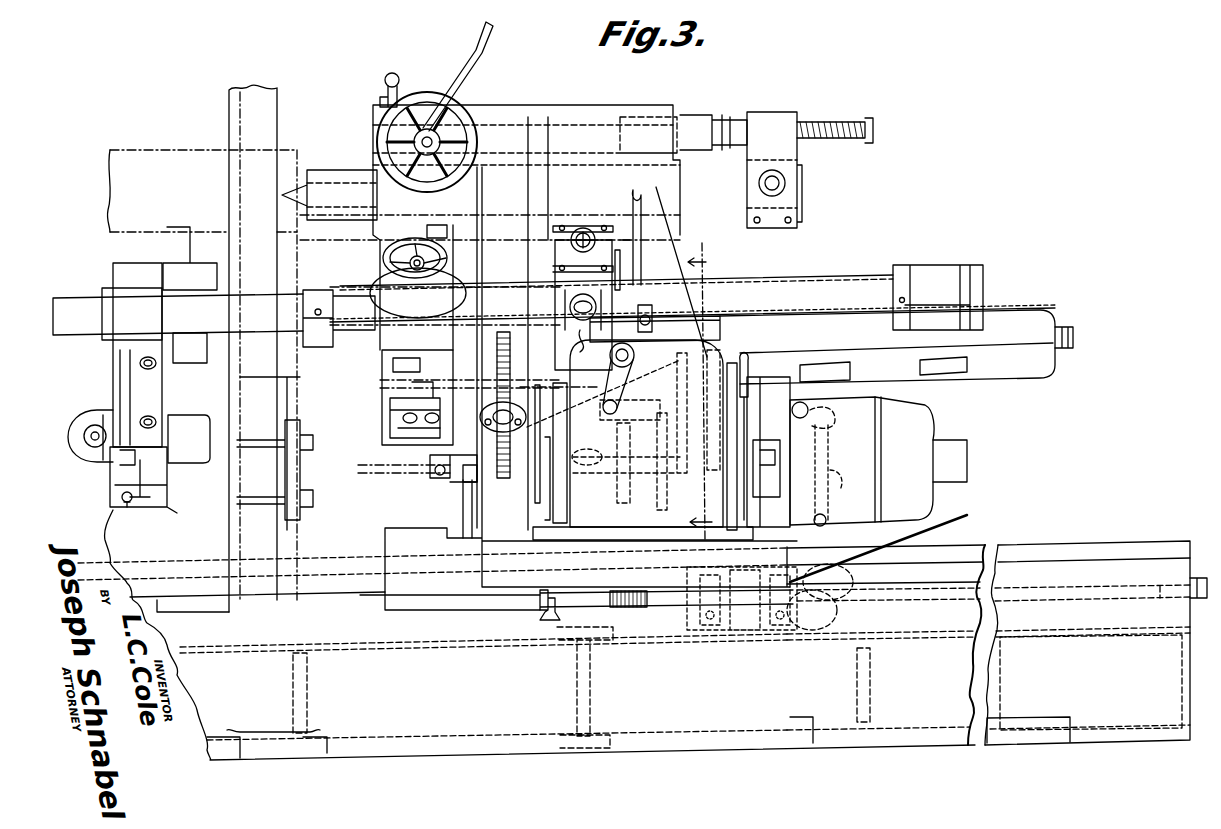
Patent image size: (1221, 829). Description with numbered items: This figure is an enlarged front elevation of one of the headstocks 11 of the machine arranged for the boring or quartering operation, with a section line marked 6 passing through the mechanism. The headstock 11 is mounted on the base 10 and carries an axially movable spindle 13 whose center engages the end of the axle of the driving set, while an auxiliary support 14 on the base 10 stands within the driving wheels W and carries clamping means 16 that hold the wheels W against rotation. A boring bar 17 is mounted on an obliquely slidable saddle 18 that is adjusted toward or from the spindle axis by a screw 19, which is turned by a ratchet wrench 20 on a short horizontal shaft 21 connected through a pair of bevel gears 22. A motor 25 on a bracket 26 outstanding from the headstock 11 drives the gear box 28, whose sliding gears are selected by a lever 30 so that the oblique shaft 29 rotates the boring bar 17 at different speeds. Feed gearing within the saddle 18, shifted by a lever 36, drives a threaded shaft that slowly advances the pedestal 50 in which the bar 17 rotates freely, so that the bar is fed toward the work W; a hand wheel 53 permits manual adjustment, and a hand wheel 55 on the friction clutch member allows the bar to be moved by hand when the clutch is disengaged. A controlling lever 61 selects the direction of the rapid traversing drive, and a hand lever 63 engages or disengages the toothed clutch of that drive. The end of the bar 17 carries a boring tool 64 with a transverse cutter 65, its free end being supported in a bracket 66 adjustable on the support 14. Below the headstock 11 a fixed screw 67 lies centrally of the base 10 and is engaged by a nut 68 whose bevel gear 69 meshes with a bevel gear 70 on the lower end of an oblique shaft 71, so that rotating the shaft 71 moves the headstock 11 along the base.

The wheels W is at (266, 137).
The base 10 is at (1037, 613).
The headstock 11 is at (597, 127).
The spindle 13 is at (336, 185).
The auxiliary support 14 is at (223, 548).
The clamping means 16 is at (295, 463).
The boring bar 17 is at (797, 295).
The saddle 18 is at (1008, 392).
The screw 19 is at (513, 336).
The ratchet wrench 20 is at (436, 478).
The short horizontal shaft 21 is at (482, 472).
The bevel gears 22 is at (500, 462).
The motor 25 is at (918, 433).
The bracket 26 is at (885, 540).
The gear box 28 is at (716, 352).
The oblique shaft 29 is at (570, 347).
The lever 30 is at (630, 390).
The lever 36 is at (390, 428).
The pedestal 50 is at (936, 267).
The hand wheel 53 is at (447, 260).
The hand wheel 55 is at (375, 290).
The controlling lever 61 is at (652, 312).
The hand lever 63 is at (633, 258).
The boring tool 64 is at (65, 315).
The cutter 65 is at (315, 283).
The bracket 66 is at (118, 347).
The fixed screw 67 is at (641, 612).
The nut 68 is at (752, 620).
The bevel gear 69 is at (825, 613).
The bevel gear 70 is at (855, 573).
The oblique shaft 71 is at (840, 472).
The section line 6 is at (703, 390).